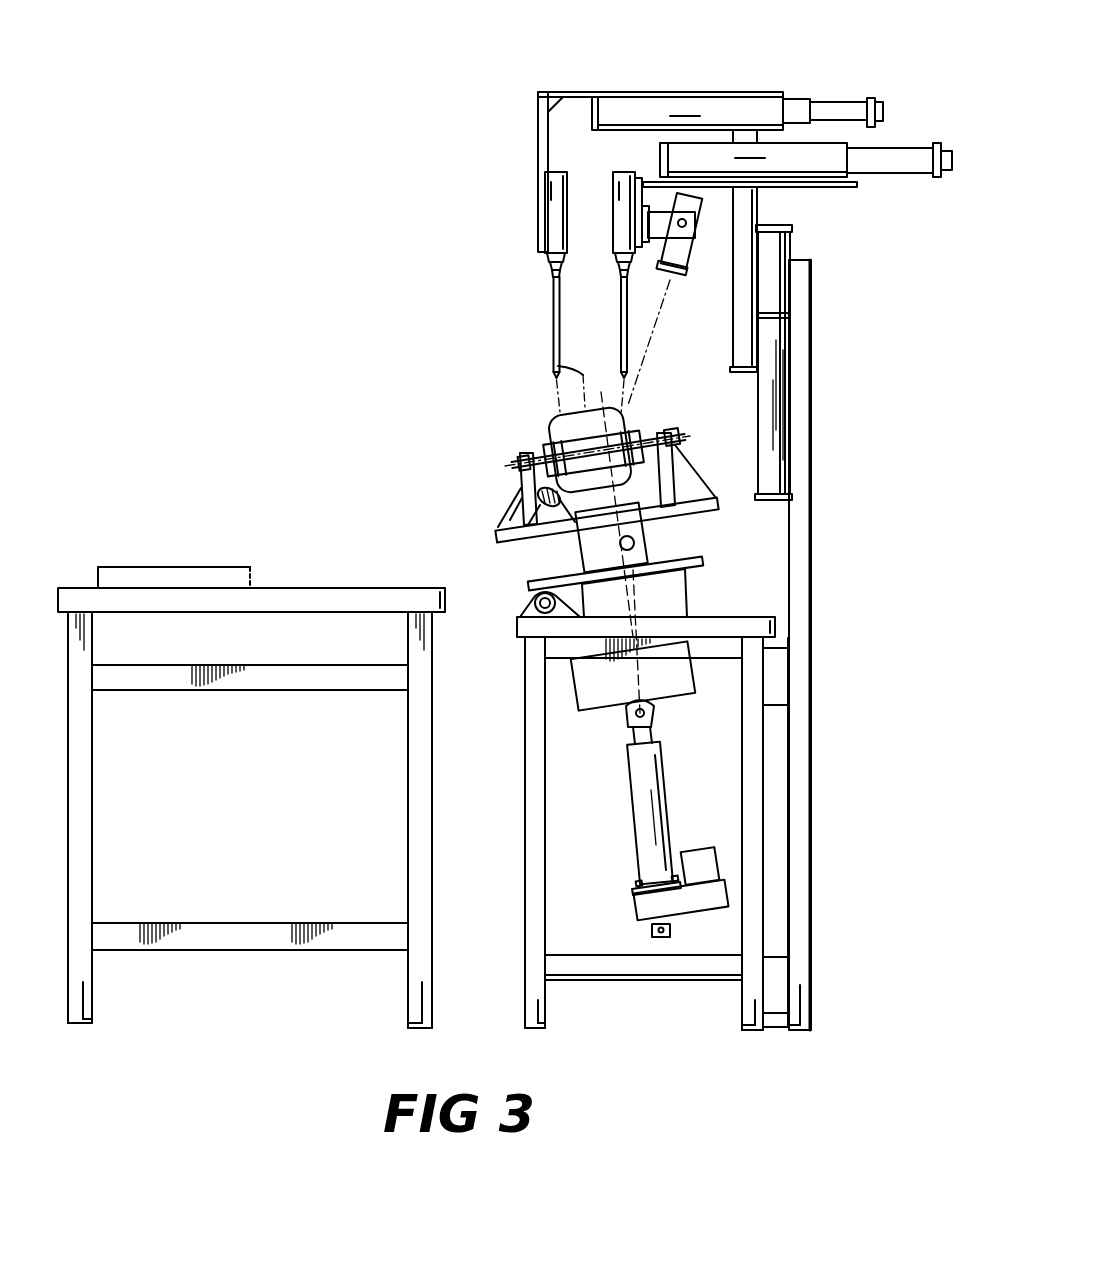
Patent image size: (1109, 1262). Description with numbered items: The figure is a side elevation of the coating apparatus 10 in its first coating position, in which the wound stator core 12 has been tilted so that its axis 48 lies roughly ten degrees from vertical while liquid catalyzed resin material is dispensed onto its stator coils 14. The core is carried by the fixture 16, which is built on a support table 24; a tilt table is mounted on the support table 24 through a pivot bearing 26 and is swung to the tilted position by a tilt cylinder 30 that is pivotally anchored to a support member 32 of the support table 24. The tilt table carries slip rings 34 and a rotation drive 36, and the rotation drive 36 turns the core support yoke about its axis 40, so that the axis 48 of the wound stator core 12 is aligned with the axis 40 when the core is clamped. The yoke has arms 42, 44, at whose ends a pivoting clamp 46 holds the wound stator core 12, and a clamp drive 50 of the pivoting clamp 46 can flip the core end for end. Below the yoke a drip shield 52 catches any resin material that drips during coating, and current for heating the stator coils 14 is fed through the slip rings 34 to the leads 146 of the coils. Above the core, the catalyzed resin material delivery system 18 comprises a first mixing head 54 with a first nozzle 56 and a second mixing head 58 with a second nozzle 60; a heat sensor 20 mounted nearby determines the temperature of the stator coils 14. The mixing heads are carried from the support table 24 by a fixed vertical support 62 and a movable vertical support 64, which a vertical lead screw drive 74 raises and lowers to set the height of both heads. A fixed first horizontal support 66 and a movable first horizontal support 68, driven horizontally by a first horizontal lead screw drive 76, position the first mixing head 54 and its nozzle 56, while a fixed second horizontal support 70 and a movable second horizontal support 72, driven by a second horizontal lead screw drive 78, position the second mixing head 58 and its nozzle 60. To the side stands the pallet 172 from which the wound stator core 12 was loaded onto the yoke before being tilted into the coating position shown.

The coating apparatus 10 is at (872, 981).
The wound stator core 12 is at (640, 424).
The stator coils 14 is at (638, 420).
The fixture 16 is at (712, 587).
The catalyzed resin material delivery system 18 is at (476, 121).
The heat sensor 20 is at (683, 250).
The support table 24 is at (525, 723).
The pivot bearing 26 is at (525, 600).
The tilt cylinder 30 is at (635, 802).
The support member 32 is at (688, 922).
The slip rings 34 is at (583, 573).
The rotation drive 36 is at (635, 543).
The axis 40 is at (638, 660).
The arm 42 is at (677, 465).
The arm 44 is at (519, 462).
The pivoting clamp 46 is at (532, 452).
The axis 48 is at (558, 366).
The clamp drive 50 is at (680, 432).
The drip shield 52 is at (720, 503).
The first mixing head 54 is at (553, 215).
The first nozzle 56 is at (552, 304).
The second mixing head 58 is at (622, 223).
The second nozzle 60 is at (618, 328).
The fixed vertical support 62 is at (811, 676).
The movable vertical support 64 is at (730, 345).
The fixed first horizontal support 66 is at (806, 99).
The movable first horizontal support 68 is at (614, 92).
The fixed second horizontal support 70 is at (893, 143).
The movable second horizontal support 72 is at (850, 188).
The vertical lead screw drive 74 is at (783, 225).
The first horizontal lead screw drive 76 is at (882, 98).
The second horizontal lead screw drive 78 is at (943, 178).
The leads 146 is at (538, 497).
The pallet 172 is at (165, 567).